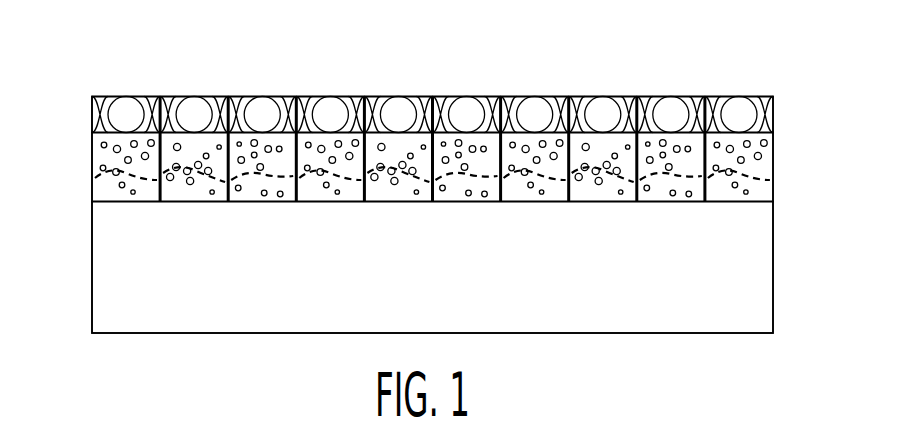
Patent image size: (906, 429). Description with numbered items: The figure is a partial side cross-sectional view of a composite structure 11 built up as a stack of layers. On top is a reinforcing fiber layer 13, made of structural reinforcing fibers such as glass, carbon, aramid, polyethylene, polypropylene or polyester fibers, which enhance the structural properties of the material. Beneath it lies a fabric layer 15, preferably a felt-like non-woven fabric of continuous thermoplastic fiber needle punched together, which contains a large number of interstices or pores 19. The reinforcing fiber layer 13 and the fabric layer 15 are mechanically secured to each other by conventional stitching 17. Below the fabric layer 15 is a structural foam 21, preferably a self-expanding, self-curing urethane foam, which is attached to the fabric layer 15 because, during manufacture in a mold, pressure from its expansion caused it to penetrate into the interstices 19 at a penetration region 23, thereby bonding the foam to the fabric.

The composite structure 11 is at (679, 63).
The reinforcing fiber layer 13 is at (123, 96).
The fabric layer 15 is at (765, 147).
The stitching 17 is at (180, 95).
The interstices or pores 19 is at (402, 154).
The structural foam 21 is at (763, 258).
The penetration region 23 is at (98, 177).